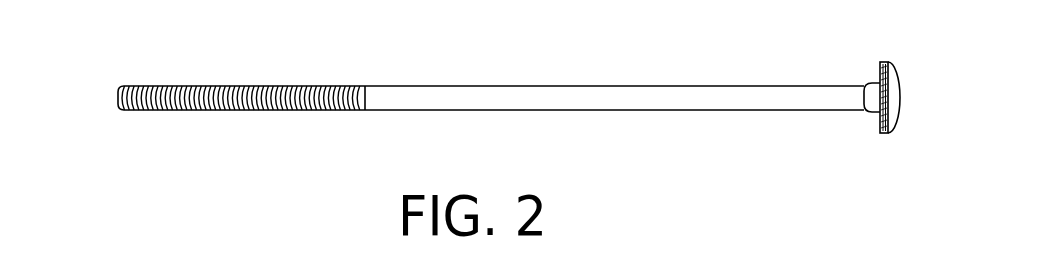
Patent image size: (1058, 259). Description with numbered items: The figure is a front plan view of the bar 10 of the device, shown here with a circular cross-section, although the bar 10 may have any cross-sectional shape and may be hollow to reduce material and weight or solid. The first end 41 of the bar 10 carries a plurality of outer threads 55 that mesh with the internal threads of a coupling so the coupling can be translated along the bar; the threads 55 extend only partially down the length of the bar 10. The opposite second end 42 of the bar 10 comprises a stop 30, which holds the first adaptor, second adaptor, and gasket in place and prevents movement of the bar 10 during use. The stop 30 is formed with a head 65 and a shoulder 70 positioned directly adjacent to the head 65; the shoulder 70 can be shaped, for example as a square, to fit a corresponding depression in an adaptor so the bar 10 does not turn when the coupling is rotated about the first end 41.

The bar 10 is at (110, 65).
The first end 41 is at (237, 70).
The second end 42 is at (908, 50).
The outer threads 55 is at (290, 90).
The head 65 is at (892, 88).
The shoulder 70 is at (874, 108).
The stop 30 is at (891, 117).